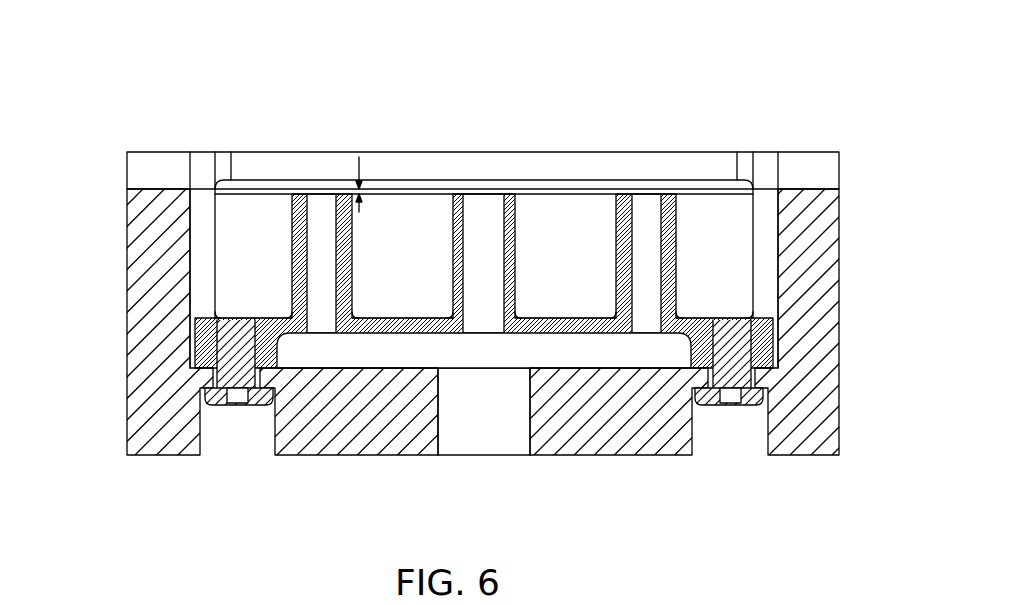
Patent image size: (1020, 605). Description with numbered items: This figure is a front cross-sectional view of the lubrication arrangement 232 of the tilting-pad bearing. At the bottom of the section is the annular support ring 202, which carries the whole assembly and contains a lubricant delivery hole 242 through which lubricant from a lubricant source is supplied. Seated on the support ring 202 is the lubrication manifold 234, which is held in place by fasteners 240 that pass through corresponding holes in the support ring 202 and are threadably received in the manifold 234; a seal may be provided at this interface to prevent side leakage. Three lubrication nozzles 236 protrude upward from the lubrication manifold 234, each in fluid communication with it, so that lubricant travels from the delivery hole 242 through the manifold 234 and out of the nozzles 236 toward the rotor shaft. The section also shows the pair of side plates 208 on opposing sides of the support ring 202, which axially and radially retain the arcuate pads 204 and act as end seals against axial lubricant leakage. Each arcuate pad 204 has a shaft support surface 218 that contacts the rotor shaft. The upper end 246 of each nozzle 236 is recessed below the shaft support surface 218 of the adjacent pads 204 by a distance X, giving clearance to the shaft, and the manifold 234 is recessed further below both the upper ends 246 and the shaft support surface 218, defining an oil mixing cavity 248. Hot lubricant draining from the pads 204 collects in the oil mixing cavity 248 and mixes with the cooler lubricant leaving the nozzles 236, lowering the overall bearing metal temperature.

The lubrication arrangement 232 is at (386, 104).
The shaft support surface 218 is at (268, 188).
The arcuate pad 204 is at (317, 180).
The lubrication nozzle 236 is at (352, 247).
The upper end 246 is at (672, 193).
The oil mixing cavity 248 is at (272, 238).
The side plate 208 is at (147, 307).
The fastener 240 is at (242, 367).
The lubrication manifold 234 is at (610, 350).
The lubricant delivery hole 242 is at (472, 412).
The annular support ring 202 is at (632, 427).